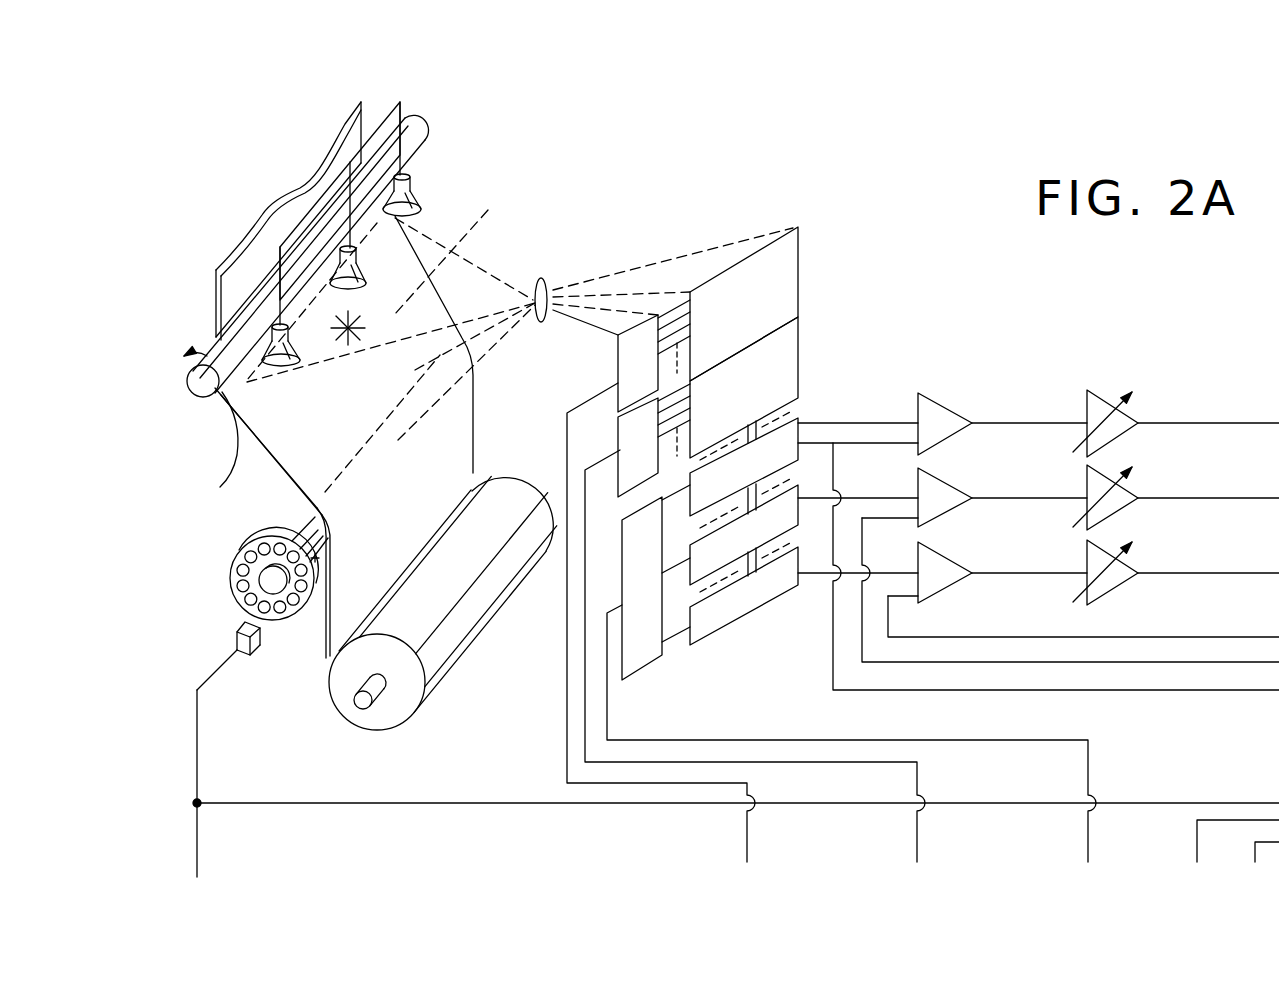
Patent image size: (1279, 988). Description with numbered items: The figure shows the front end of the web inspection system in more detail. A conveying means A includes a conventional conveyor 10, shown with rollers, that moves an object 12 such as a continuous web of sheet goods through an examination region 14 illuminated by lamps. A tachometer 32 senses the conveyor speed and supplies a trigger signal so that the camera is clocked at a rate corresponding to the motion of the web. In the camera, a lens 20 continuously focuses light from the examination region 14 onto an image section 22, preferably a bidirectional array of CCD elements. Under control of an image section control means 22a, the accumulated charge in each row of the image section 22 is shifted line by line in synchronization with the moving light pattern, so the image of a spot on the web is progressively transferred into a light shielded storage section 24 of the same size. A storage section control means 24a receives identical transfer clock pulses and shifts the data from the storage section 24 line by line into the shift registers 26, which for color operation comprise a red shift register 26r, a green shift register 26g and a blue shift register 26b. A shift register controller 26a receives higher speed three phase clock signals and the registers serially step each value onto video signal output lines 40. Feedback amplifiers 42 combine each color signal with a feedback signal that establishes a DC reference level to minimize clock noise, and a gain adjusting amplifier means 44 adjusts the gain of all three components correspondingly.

The conveyor 10 is at (310, 530).
The moving object 12 is at (276, 196).
The examination region 14 is at (520, 342).
The lens 20 is at (548, 280).
The image section 22 is at (787, 263).
The image section control means 22a is at (633, 350).
The storage section 24 is at (787, 342).
The storage section control means 24a is at (632, 440).
The shift registers 26 is at (794, 545).
The shift register controller 26a is at (642, 657).
The blue shift register 26b is at (703, 628).
The green shift register 26g is at (790, 500).
The red shift register 26r is at (795, 423).
The tachometer 32 is at (227, 571).
The video signal output lines 40 is at (815, 585).
The feedback amplifiers 42 is at (955, 390).
The gain adjusting amplifier means 44 is at (1112, 390).
The conveying means A is at (452, 195).